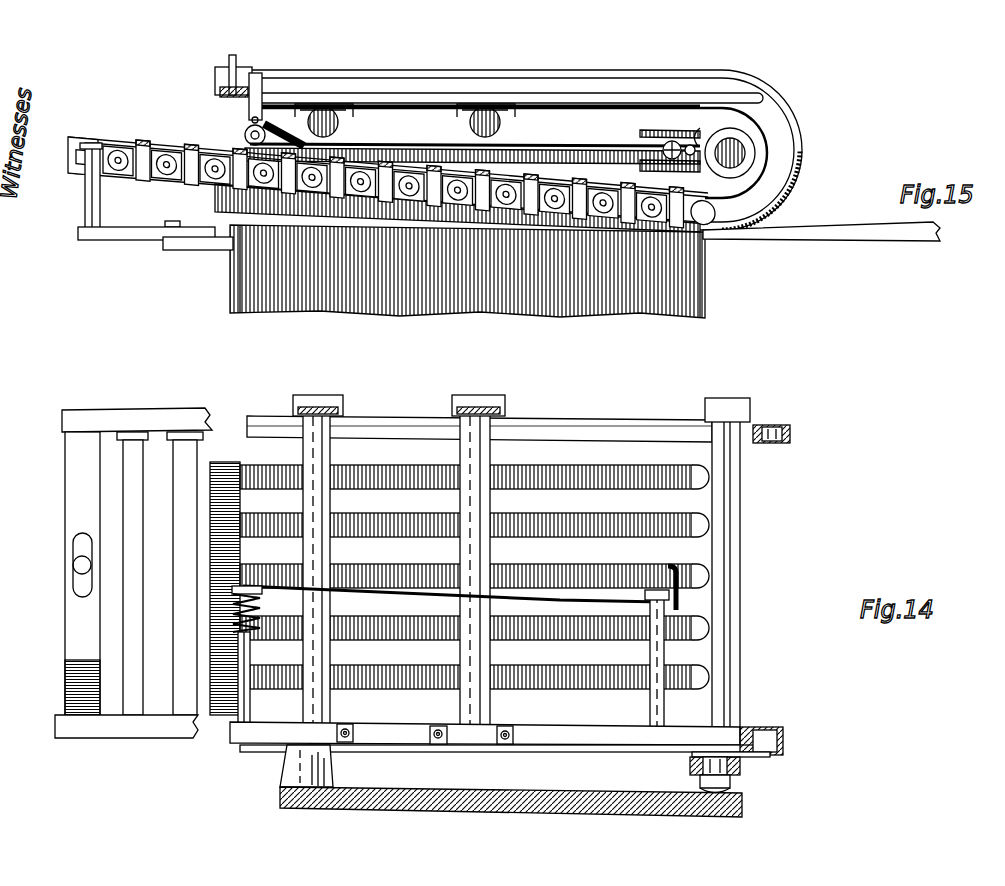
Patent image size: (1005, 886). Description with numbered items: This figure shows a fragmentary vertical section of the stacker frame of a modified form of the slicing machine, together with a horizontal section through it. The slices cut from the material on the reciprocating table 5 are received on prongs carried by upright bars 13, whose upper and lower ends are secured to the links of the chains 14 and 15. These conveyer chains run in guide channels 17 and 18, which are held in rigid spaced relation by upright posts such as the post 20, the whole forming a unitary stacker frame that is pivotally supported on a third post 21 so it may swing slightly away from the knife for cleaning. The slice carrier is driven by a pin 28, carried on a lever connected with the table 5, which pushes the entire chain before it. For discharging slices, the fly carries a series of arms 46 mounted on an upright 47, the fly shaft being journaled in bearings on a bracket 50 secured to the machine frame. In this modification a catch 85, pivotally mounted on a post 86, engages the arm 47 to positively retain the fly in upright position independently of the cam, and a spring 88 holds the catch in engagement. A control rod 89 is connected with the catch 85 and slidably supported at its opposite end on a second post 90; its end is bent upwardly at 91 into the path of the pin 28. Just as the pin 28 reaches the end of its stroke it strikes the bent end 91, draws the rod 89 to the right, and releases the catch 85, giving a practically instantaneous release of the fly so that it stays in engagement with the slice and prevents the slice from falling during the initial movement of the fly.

In FIG. 15, the reciprocating table 5 is at (688, 294).
In FIG. 15, the upright bars 13 is at (627, 147).
In FIG. 15, the chain 14 is at (270, 185).
In FIG. 14, the chain 15 is at (860, 548).
In FIG. 14, the guide channel 17 is at (789, 433).
In FIG. 15, the guide channel 18 is at (768, 114).
In FIG. 14, the guide channel 18 is at (766, 745).
In FIG. 14, the upright post 20 is at (733, 521).
In FIG. 14, the third post 21 is at (325, 469).
In FIG. 15, the pin 28 is at (98, 210).
In FIG. 14, the arms 46 is at (603, 486).
In FIG. 15, the upright 47 is at (247, 86).
In FIG. 14, the upright 47 is at (222, 470).
In FIG. 14, the bracket 50 is at (596, 796).
In FIG. 15, the catch 85 is at (250, 108).
In FIG. 14, the post 86 is at (249, 716).
In FIG. 14, the spring 88 is at (262, 605).
In FIG. 15, the control rod 89 is at (384, 142).
In FIG. 14, the control rod 89 is at (548, 600).
In FIG. 14, the second post 90 is at (652, 668).
In FIG. 15, the bent end 91 is at (716, 138).
In FIG. 14, the bent end 91 is at (668, 567).